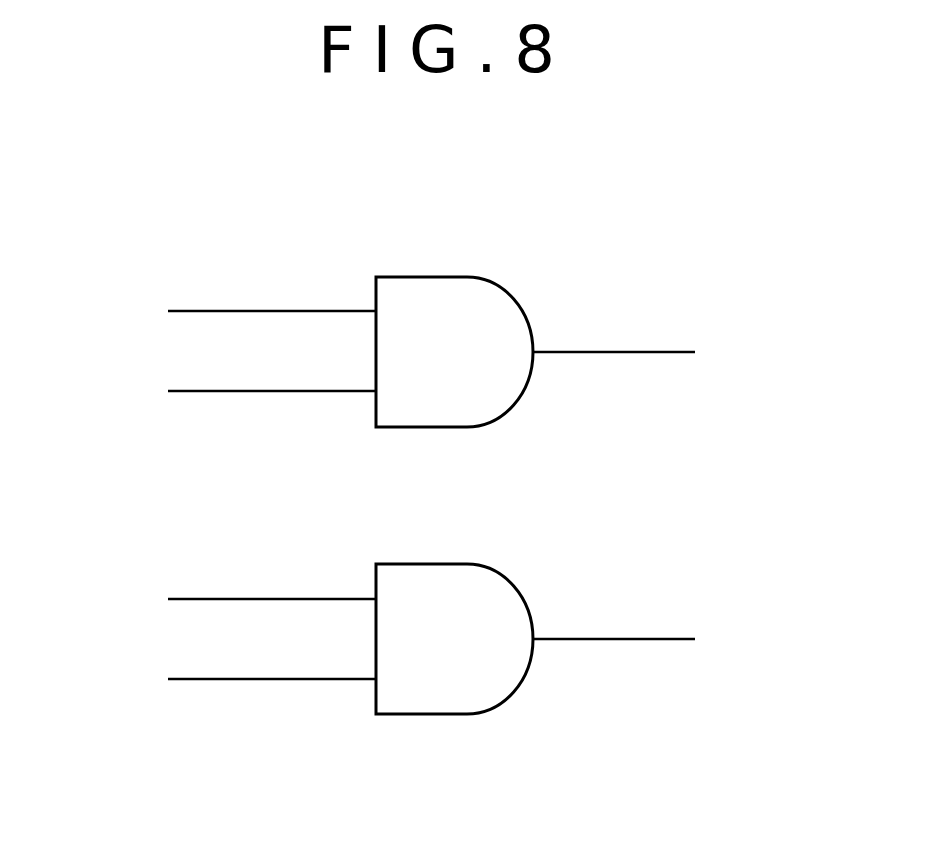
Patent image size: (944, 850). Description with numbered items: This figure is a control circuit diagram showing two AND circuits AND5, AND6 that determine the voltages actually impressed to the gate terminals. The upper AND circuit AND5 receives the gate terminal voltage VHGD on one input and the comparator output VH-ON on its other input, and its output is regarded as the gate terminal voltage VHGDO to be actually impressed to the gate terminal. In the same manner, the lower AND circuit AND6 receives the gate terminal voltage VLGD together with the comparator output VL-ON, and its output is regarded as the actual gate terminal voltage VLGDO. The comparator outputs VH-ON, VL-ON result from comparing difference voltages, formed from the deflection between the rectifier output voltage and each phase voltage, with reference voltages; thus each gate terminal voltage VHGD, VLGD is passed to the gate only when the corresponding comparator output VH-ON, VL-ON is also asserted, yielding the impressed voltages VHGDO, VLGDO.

The AND circuit AND5 is at (433, 292).
The AND circuit AND6 is at (433, 700).
The gate terminal voltage VHGD is at (219, 312).
The comparator output VH-ON is at (211, 394).
The gate terminal voltage to be actually impressed VHGDO is at (680, 352).
The gate terminal voltage VLGD is at (221, 601).
The comparator output VL-ON is at (214, 681).
The gate terminal voltage to be actually impressed VLGDO is at (677, 639).